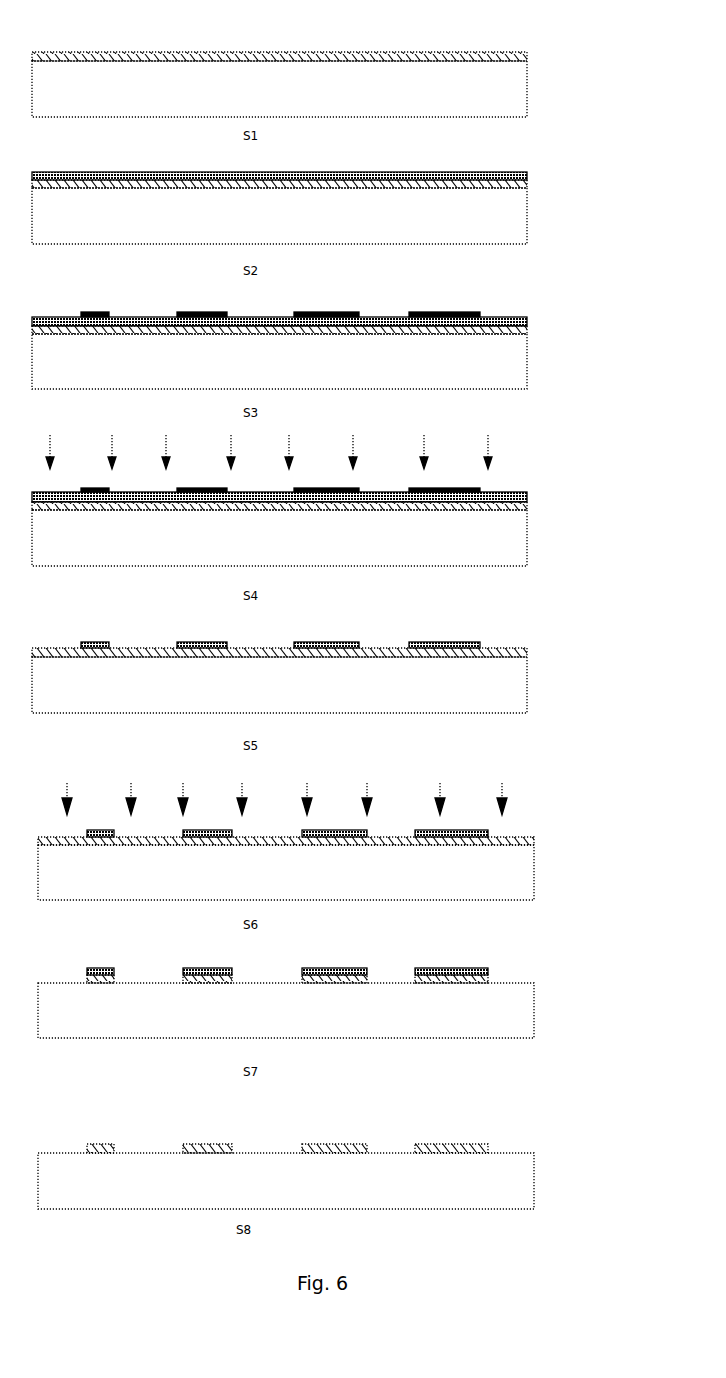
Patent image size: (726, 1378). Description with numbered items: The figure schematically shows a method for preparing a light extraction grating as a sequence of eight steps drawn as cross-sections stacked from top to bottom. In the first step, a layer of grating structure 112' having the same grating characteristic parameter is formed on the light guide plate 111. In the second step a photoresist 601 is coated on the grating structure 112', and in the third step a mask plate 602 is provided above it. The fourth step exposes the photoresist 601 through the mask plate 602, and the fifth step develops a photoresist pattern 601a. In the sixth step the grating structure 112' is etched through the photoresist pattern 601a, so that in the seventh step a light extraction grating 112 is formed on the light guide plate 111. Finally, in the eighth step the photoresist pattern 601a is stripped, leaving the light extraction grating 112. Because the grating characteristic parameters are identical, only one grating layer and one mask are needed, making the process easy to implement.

The light guide plate 111 is at (527, 88).
The grating structure 112' is at (322, 43).
The photoresist 601 is at (527, 176).
The mask plate 602 is at (480, 312).
The photoresist pattern 601a is at (480, 643).
The light extraction grating 112 is at (338, 959).